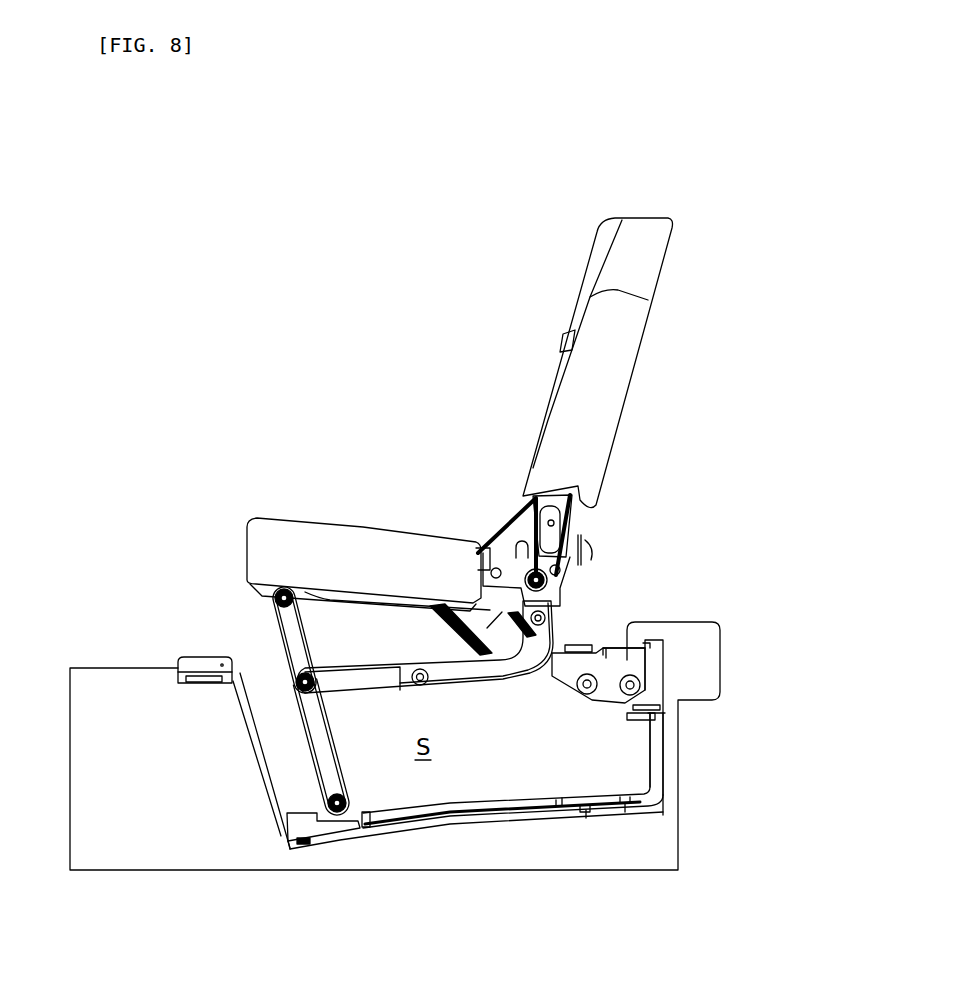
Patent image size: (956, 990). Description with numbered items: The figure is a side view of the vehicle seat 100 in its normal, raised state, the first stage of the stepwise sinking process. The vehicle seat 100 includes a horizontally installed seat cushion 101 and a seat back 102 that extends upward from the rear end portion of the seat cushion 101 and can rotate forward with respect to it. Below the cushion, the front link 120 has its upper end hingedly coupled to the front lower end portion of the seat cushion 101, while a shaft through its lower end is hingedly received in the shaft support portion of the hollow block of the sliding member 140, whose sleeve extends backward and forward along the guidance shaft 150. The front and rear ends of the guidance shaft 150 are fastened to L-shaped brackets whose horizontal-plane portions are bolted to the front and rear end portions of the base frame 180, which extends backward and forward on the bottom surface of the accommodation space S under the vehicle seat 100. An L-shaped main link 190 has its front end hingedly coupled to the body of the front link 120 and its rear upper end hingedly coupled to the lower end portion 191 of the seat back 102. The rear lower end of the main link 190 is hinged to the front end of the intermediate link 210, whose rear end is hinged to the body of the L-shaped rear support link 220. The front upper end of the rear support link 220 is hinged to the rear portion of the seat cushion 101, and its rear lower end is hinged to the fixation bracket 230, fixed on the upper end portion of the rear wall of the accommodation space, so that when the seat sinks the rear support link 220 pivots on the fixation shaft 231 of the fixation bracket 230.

The vehicle seat 100 is at (152, 161).
The seat cushion 101 is at (360, 545).
The seat back 102 is at (623, 332).
The front link 120 is at (275, 640).
The sliding member 140 is at (340, 847).
The guidance shaft 150 is at (450, 800).
The base frame 180 is at (380, 830).
The main link 190 is at (500, 672).
The lower end portion of the seat back 191 is at (560, 592).
The intermediate link 210 is at (610, 697).
The rear support link 220 is at (562, 676).
The fixation bracket 230 is at (652, 698).
The fixation shaft 231 is at (627, 668).